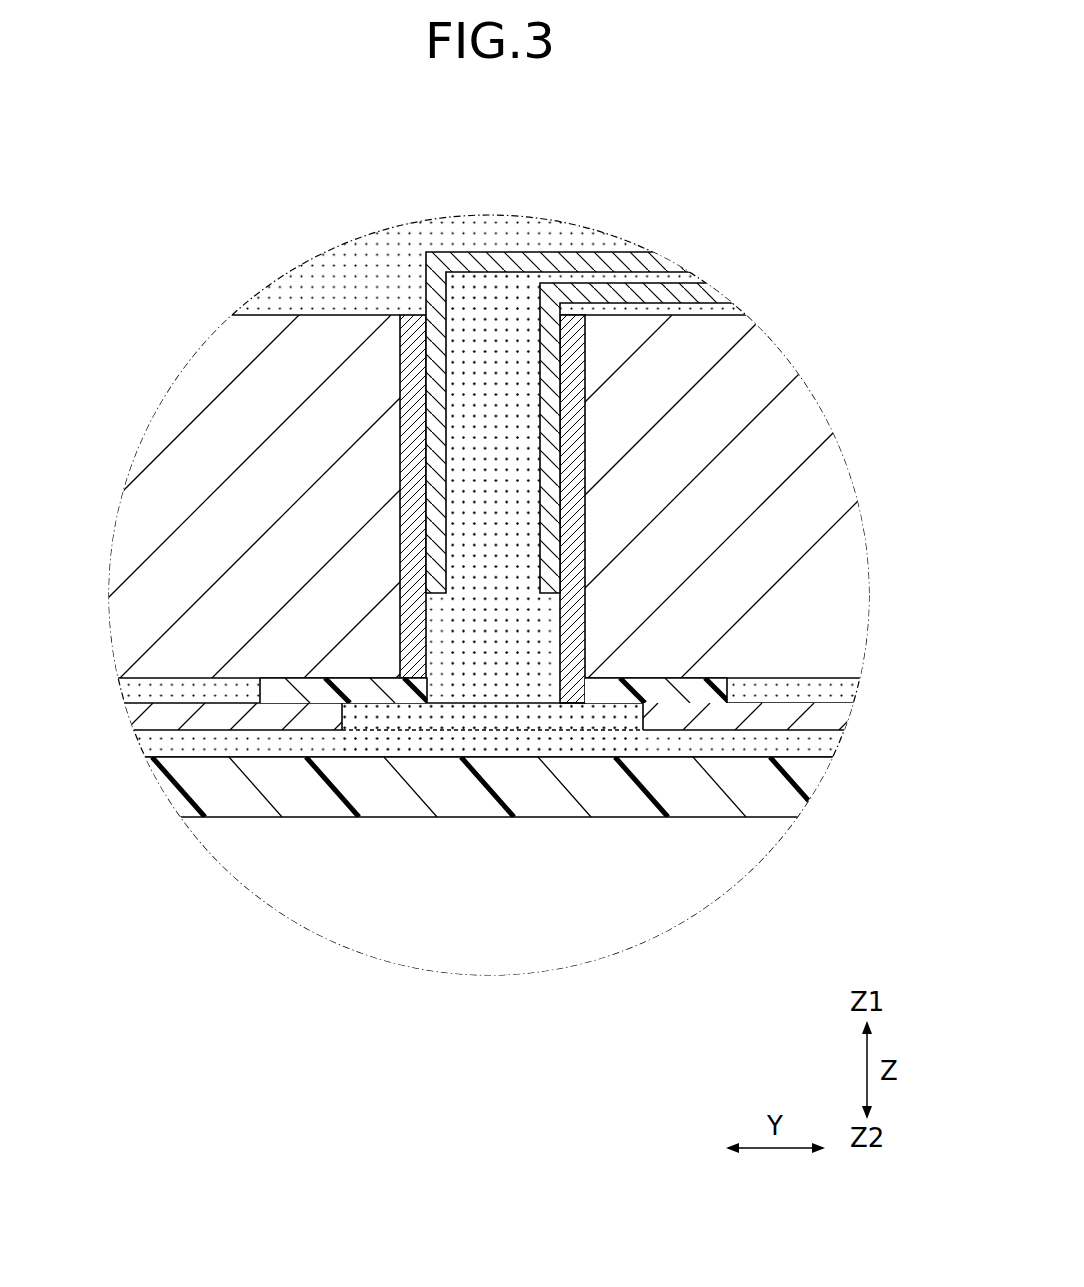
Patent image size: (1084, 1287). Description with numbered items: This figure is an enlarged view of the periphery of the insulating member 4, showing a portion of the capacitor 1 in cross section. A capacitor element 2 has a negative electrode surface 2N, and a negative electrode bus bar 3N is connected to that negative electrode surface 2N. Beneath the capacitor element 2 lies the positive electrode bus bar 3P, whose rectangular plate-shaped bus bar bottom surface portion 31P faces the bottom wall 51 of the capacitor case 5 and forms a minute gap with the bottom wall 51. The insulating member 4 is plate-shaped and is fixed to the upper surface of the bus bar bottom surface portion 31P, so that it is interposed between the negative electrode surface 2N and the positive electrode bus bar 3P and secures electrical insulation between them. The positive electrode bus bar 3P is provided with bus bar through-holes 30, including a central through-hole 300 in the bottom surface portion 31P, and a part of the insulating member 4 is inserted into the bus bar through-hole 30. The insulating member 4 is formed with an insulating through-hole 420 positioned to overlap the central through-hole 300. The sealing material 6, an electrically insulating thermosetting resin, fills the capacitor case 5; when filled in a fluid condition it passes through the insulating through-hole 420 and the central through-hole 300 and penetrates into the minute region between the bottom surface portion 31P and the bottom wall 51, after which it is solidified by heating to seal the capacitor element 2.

The semiconductor device 1 is at (744, 164).
The capacitor element 2 is at (186, 457).
The negative electrode surface 2N is at (417, 333).
The negative electrode bus bar 3N is at (562, 258).
The positive electrode bus bar 3P is at (837, 720).
The bus bar bottom surface portion 31P is at (792, 722).
The insulating member 4 is at (509, 848).
The insulating through-hole 420 is at (428, 692).
The central through-hole 300 is at (500, 878).
The bus bar through-hole 30 is at (342, 705).
The capacitor case 5 is at (500, 872).
The bottom wall 51 is at (738, 793).
The sealing material 6 is at (497, 320).